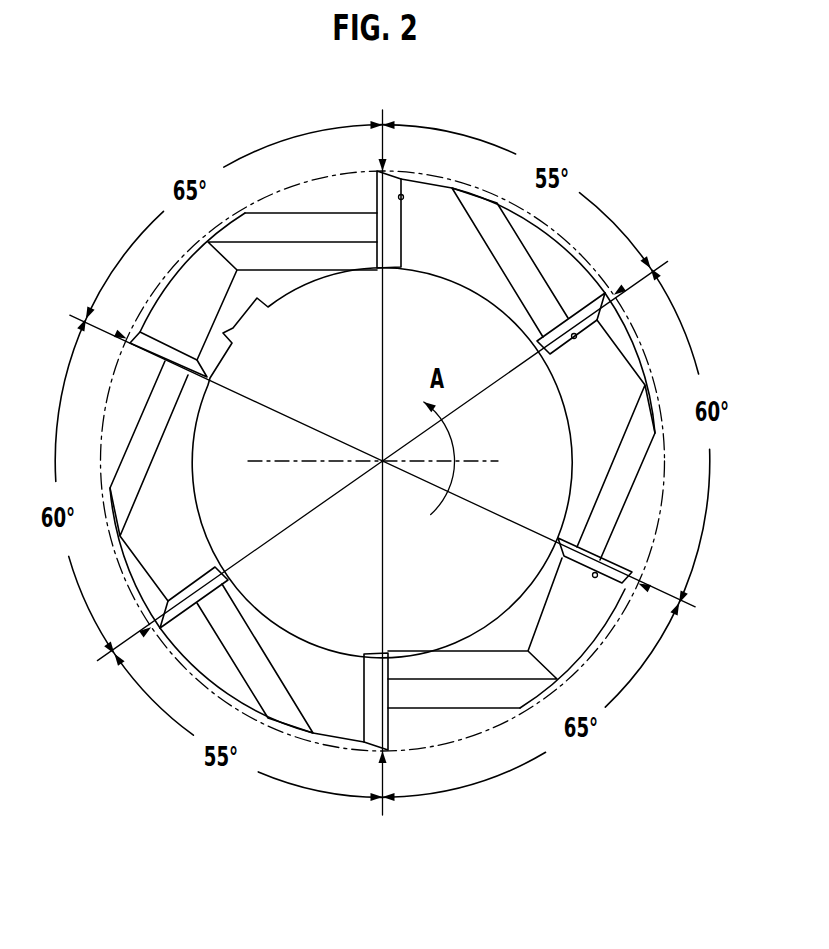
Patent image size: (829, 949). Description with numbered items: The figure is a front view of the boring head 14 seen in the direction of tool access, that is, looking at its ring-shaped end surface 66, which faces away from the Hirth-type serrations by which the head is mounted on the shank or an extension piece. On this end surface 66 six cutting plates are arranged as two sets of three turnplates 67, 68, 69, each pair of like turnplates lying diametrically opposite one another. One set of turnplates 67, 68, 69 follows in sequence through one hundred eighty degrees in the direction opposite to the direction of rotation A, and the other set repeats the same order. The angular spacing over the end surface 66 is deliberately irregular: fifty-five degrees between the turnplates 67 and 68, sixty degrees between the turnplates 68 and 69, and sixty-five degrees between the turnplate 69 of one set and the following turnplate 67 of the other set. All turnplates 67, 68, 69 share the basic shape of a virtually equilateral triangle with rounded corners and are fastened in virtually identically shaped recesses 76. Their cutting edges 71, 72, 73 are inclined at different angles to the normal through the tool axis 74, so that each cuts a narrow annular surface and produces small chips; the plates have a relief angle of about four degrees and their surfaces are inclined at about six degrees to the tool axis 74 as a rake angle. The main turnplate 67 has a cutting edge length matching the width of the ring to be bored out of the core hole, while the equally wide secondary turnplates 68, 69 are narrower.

The boring head 14 is at (664, 373).
The end surface 66 is at (580, 498).
The main turnplate 67 is at (381, 462).
The secondary turnplate 68 is at (383, 459).
The secondary turnplate 69 is at (382, 456).
The cutting edge 71 is at (377, 200).
The cutting edge 72 is at (577, 311).
The cutting edge 73 is at (160, 356).
The tool axis 74 is at (382, 463).
The recess 76 is at (404, 197).